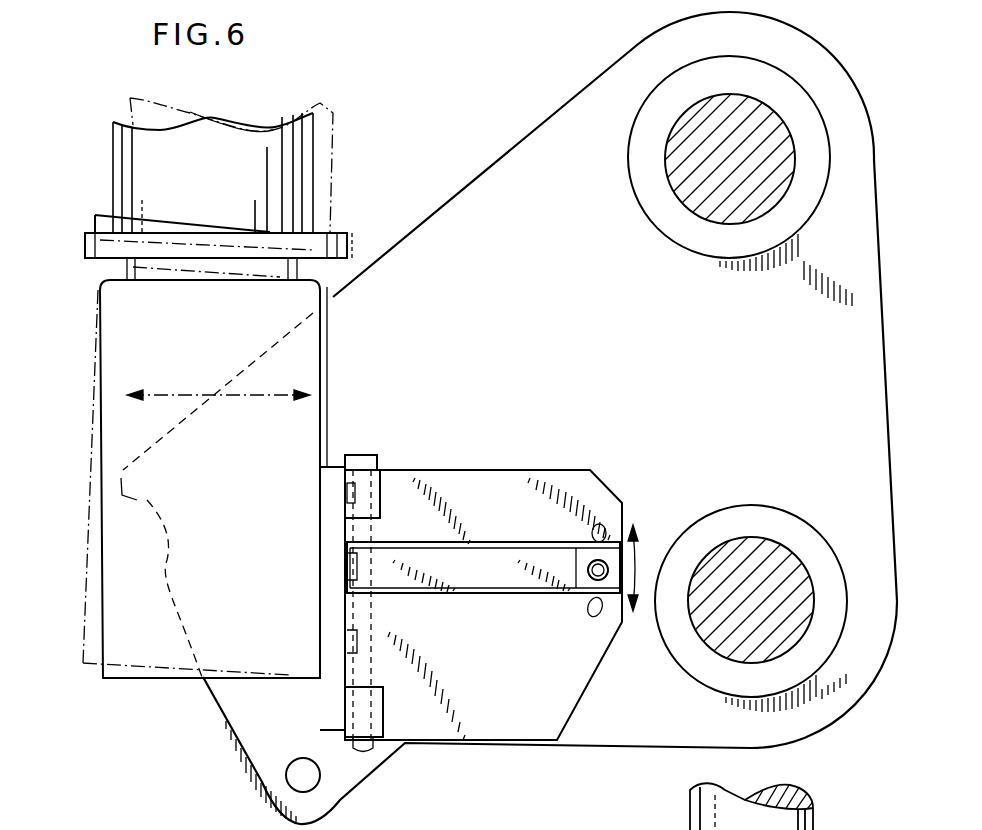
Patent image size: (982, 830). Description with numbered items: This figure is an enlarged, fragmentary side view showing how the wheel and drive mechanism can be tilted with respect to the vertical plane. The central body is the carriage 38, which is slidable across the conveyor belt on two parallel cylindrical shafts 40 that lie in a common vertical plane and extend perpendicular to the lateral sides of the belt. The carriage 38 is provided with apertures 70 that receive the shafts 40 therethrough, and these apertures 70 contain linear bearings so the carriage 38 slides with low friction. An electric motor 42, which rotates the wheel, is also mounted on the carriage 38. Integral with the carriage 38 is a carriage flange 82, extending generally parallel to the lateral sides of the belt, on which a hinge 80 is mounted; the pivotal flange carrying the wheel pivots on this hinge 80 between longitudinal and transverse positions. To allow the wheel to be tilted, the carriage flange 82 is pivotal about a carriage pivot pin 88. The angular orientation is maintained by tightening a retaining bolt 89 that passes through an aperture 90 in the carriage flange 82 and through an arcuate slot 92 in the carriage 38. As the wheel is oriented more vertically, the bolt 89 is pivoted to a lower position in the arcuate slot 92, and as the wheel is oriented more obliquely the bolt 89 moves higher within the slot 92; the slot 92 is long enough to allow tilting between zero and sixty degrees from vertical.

The carriage 38 is at (490, 190).
The shafts 40 is at (748, 171).
The electric motor 42 is at (127, 350).
The apertures 70 is at (736, 146).
The hinge 80 is at (358, 458).
The carriage flange 82 is at (430, 468).
The carriage pivot pin 88 is at (305, 773).
The retaining bolt 89 is at (592, 580).
The aperture 90 is at (565, 597).
The arcuate slot 92 is at (598, 614).